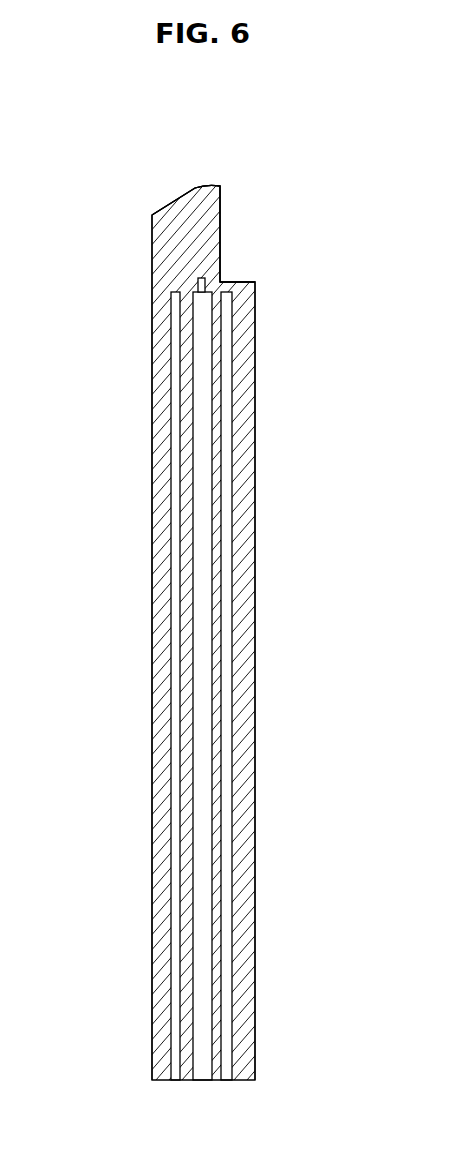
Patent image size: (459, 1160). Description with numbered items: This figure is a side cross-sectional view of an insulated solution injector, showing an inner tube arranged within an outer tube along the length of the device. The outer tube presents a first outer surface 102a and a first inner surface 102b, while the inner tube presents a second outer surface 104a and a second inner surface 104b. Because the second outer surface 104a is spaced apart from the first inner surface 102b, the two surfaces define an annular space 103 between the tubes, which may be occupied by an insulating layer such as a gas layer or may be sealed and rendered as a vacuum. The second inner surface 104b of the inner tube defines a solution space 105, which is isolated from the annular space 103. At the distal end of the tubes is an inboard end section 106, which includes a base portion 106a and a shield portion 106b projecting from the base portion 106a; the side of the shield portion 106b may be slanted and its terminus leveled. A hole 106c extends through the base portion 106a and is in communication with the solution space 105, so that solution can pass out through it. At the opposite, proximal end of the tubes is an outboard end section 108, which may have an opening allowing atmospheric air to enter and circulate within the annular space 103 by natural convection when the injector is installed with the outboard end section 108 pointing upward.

The first outer surface 102a is at (152, 614).
The first inner surface 102b is at (173, 641).
The annular space 103 is at (186, 681).
The second outer surface 104a is at (173, 744).
The second inner surface 104b is at (190, 765).
The solution space 105 is at (200, 847).
The inboard end section 106 is at (256, 202).
The base portion 106a is at (256, 302).
The shield portion 106b is at (158, 254).
The hole 106c is at (204, 278).
The outboard end section 108 is at (279, 1087).